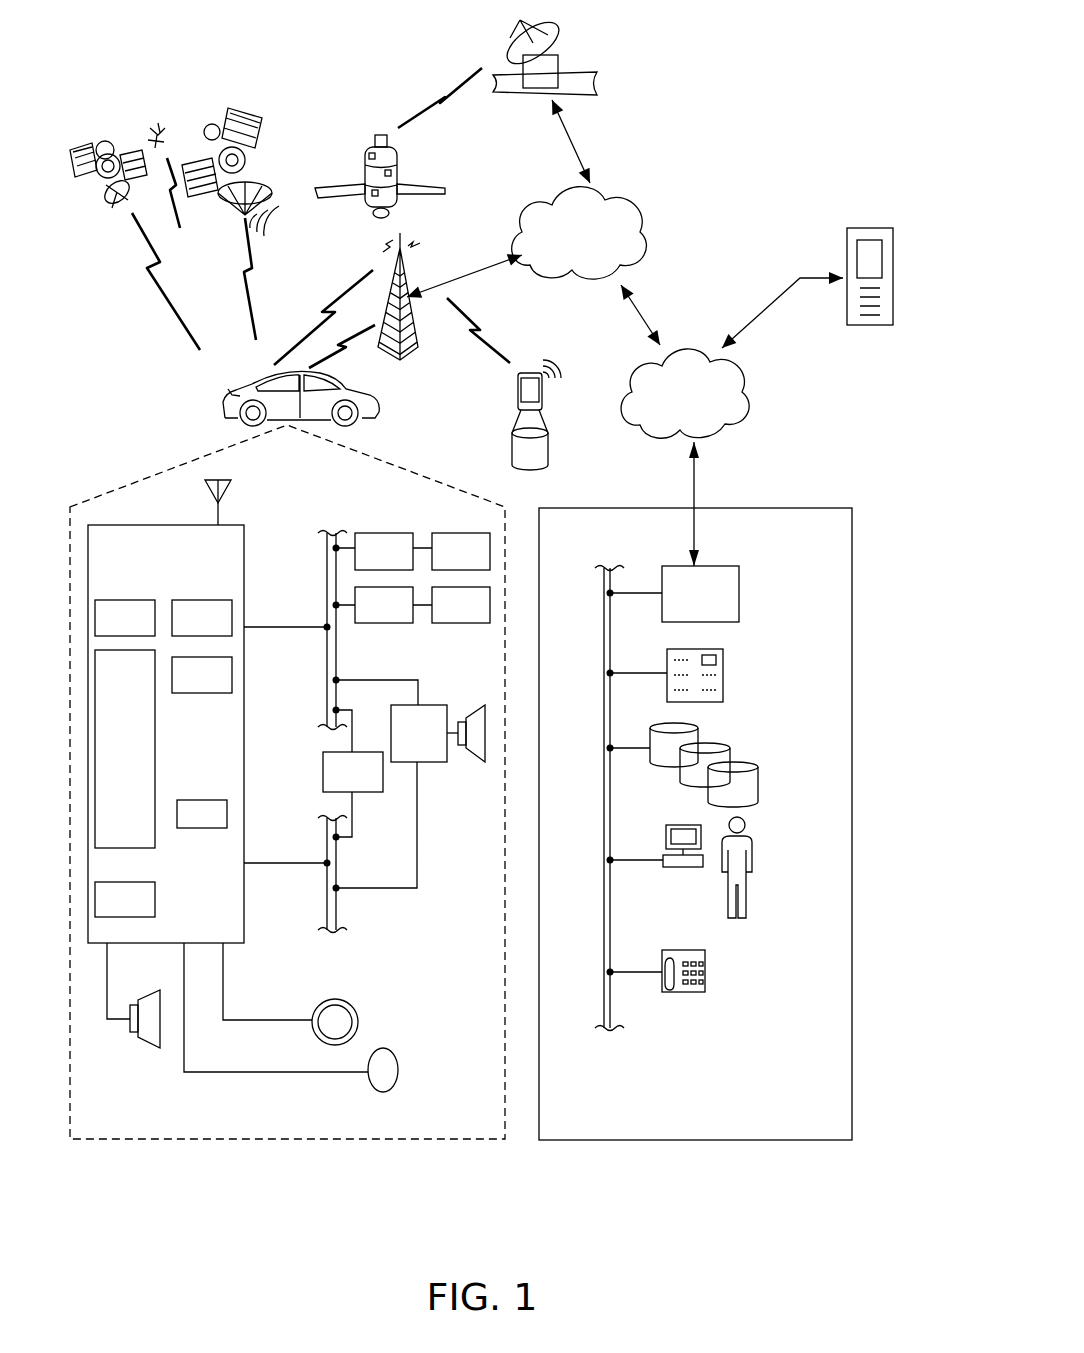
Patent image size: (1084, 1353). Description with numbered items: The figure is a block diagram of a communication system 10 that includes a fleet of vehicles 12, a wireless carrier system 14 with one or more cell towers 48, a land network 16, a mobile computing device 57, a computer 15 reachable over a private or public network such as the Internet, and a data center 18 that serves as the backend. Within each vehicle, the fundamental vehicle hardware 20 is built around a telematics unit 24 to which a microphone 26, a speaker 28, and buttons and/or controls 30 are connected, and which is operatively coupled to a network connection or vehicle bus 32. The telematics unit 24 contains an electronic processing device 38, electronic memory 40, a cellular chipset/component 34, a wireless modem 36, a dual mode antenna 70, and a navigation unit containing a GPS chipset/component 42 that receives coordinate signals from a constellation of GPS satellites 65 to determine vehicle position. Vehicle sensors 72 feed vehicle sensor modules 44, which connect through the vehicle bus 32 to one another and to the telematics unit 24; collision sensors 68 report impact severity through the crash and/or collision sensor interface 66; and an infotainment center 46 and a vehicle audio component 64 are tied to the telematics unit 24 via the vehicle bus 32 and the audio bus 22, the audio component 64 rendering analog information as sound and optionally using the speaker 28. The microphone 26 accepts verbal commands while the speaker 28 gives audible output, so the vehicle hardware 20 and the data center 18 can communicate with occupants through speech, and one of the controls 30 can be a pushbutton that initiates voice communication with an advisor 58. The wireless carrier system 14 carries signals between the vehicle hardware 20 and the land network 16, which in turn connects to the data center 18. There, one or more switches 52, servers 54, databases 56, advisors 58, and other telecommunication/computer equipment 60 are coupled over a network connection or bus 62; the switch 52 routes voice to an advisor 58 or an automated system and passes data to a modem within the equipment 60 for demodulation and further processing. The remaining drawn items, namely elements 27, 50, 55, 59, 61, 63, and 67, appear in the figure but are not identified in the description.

The communication system 10 is at (100, 388).
The vehicle 12 is at (222, 412).
The wireless carrier system 14 is at (406, 372).
The computer 15 is at (893, 248).
The land network 16 is at (750, 388).
The data center 18 is at (695, 1143).
The vehicle hardware 20 is at (262, 1142).
The audio bus 22 is at (322, 910).
The telematics unit 24 is at (244, 765).
The microphone 26 is at (390, 1048).
The navigation module 27 is at (200, 828).
The speaker 28 is at (150, 1050).
The buttons and/or controls 30 is at (345, 1000).
The vehicle bus 32 is at (337, 643).
The cellular chipset/component 34 is at (126, 600).
The wireless modem 36 is at (200, 600).
The electronic processing device 38 is at (155, 748).
The electronic memory 40 is at (155, 898).
The GPS chipset/component 42 is at (232, 672).
The vehicle sensor module 44 is at (405, 623).
The infotainment center 46 is at (323, 778).
The cell tower 48 is at (406, 282).
The cellular network 50 is at (522, 212).
The switch 52 is at (739, 593).
The server 54 is at (723, 673).
The mobile device processor 55 is at (528, 373).
The database 56 is at (758, 780).
The mobile computing device 57 is at (518, 392).
The advisor 58 is at (758, 855).
The mobile device display 59 is at (542, 392).
The telecommunication/computer equipment 60 is at (705, 965).
The base station 61 is at (548, 445).
The network connection or bus 62 is at (604, 778).
The short range wireless communication 63 is at (552, 365).
The vehicle audio component 64 is at (580, 72).
The GPS satellites 65 is at (180, 92).
The crash and/or collision sensor interface 66 is at (374, 533).
The communication satellite 67 is at (398, 162).
The collision sensor 68 is at (448, 533).
The dual mode antenna 70 is at (220, 512).
The vehicle sensors 72 is at (478, 623).